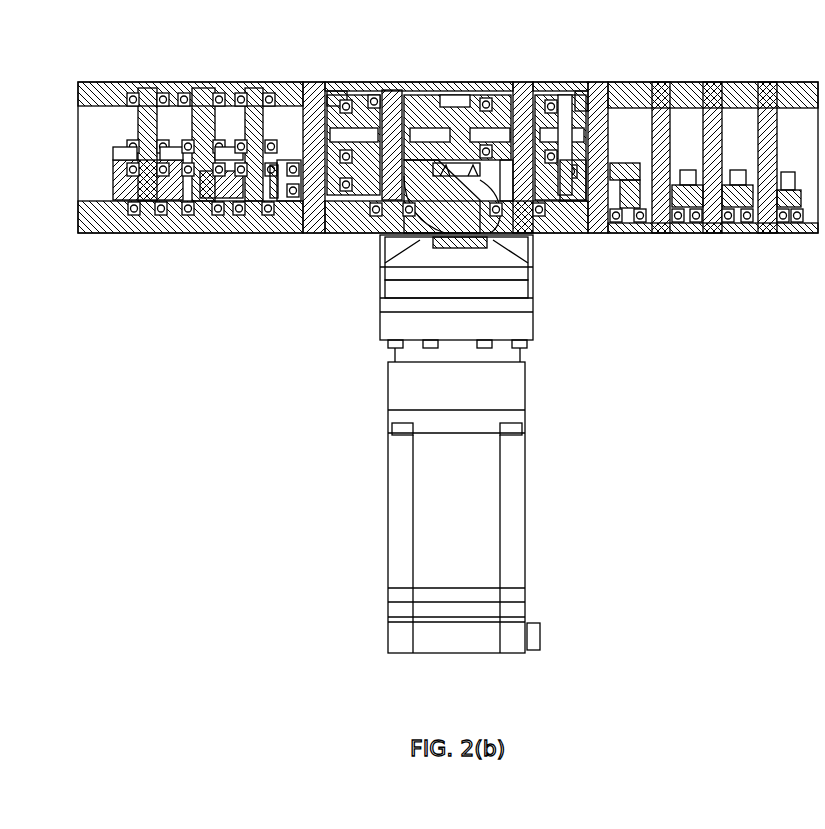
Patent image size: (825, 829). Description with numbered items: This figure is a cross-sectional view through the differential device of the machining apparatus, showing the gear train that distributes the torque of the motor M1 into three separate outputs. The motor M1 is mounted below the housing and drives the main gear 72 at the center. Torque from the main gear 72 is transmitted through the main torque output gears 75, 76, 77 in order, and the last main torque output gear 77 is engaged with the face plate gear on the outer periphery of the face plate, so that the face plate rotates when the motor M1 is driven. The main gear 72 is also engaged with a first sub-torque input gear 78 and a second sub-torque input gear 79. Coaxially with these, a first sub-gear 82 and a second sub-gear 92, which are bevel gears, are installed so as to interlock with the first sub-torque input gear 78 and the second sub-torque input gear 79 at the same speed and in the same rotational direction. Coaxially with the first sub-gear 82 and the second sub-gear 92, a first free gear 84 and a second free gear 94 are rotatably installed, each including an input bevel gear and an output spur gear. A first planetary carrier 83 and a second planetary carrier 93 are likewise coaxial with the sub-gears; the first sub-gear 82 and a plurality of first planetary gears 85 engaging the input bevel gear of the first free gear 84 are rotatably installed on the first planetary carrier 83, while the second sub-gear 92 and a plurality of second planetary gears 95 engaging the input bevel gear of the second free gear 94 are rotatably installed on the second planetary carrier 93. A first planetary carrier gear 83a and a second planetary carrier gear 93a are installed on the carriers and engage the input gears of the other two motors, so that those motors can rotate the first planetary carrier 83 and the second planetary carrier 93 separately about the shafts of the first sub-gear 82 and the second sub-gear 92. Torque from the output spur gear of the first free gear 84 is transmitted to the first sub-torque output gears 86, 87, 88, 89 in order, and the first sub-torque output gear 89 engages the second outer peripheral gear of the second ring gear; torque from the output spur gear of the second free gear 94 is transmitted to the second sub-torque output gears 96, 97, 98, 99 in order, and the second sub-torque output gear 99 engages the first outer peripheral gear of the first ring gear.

The main gear 72 is at (500, 222).
The main torque output gear 75 is at (255, 195).
The main torque output gear 76 is at (203, 217).
The main torque output gear 77 is at (147, 213).
The first sub-torque input gear 78 is at (413, 178).
The second sub-torque input gear 79 is at (575, 207).
The first sub-gear 82 is at (377, 95).
The first planetary carrier 83 is at (348, 100).
The first planetary carrier gear 83a is at (312, 93).
The first free gear 84 is at (400, 242).
The first planetary gear 85 is at (418, 95).
The first sub-torque output gear 86 is at (300, 203).
The first sub-torque output gear 87 is at (228, 160).
The first sub-torque output gear 88 is at (182, 158).
The first sub-torque output gear 89 is at (124, 160).
The second sub-gear 92 is at (533, 95).
The second planetary carrier 93 is at (568, 95).
The second planetary carrier gear 93a is at (598, 95).
The second free gear 94 is at (530, 262).
The second planetary gear 95 is at (483, 95).
The second sub-torque output gear 96 is at (630, 210).
The second sub-torque output gear 97 is at (683, 222).
The second sub-torque output gear 98 is at (737, 220).
The second sub-torque output gear 99 is at (788, 227).
The motor M1 is at (398, 553).